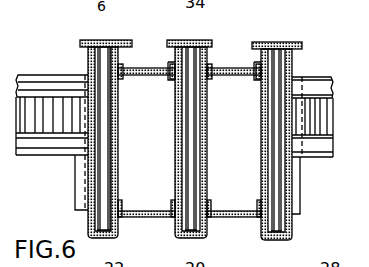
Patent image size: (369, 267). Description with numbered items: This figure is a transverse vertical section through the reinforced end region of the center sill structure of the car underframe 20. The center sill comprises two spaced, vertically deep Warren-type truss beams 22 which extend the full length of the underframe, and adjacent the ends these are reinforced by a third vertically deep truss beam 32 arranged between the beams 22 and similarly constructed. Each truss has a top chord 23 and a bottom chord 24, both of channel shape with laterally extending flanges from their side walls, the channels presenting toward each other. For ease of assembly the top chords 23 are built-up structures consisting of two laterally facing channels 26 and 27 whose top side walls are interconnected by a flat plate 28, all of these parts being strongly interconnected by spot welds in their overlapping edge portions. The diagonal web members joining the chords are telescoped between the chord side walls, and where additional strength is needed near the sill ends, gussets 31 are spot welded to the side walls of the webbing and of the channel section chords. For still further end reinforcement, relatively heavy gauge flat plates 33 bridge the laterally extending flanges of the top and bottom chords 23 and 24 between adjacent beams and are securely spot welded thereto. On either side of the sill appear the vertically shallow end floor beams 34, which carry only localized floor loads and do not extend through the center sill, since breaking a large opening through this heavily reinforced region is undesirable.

The second tubular member 20 is at (189, 240).
The truss beam 22 is at (91, 43).
The top chord 23 is at (210, 53).
The bottom chord 24 is at (277, 242).
The laterally facing channel 26 is at (292, 63).
The laterally facing channel 27 is at (260, 58).
The flat plate 28 is at (284, 42).
The gusset 31 is at (182, 85).
The third truss beam 32 is at (206, 39).
The flat plate 33 is at (143, 67).
The end floor beam 34 is at (43, 142).